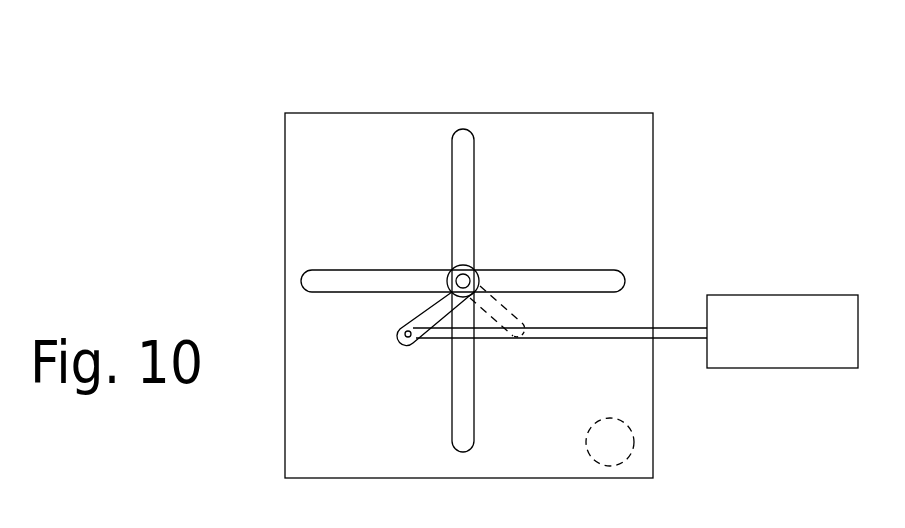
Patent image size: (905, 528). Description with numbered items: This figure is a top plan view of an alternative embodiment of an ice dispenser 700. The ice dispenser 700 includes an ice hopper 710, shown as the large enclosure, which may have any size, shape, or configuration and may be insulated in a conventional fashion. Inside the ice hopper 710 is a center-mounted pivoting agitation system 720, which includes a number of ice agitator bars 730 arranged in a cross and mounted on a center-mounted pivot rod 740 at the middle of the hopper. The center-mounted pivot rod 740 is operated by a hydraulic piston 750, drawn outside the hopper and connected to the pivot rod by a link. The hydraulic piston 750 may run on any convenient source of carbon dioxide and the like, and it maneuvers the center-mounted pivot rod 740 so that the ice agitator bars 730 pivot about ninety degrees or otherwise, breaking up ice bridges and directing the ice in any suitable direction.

The ice dispenser 700 is at (258, 88).
The ice hopper 710 is at (680, 169).
The center-mounted pivoting agitation system 720 is at (362, 261).
The ice agitator bars 730 is at (475, 190).
The center-mounted pivot rod 740 is at (475, 270).
The hydraulic piston 750 is at (777, 295).